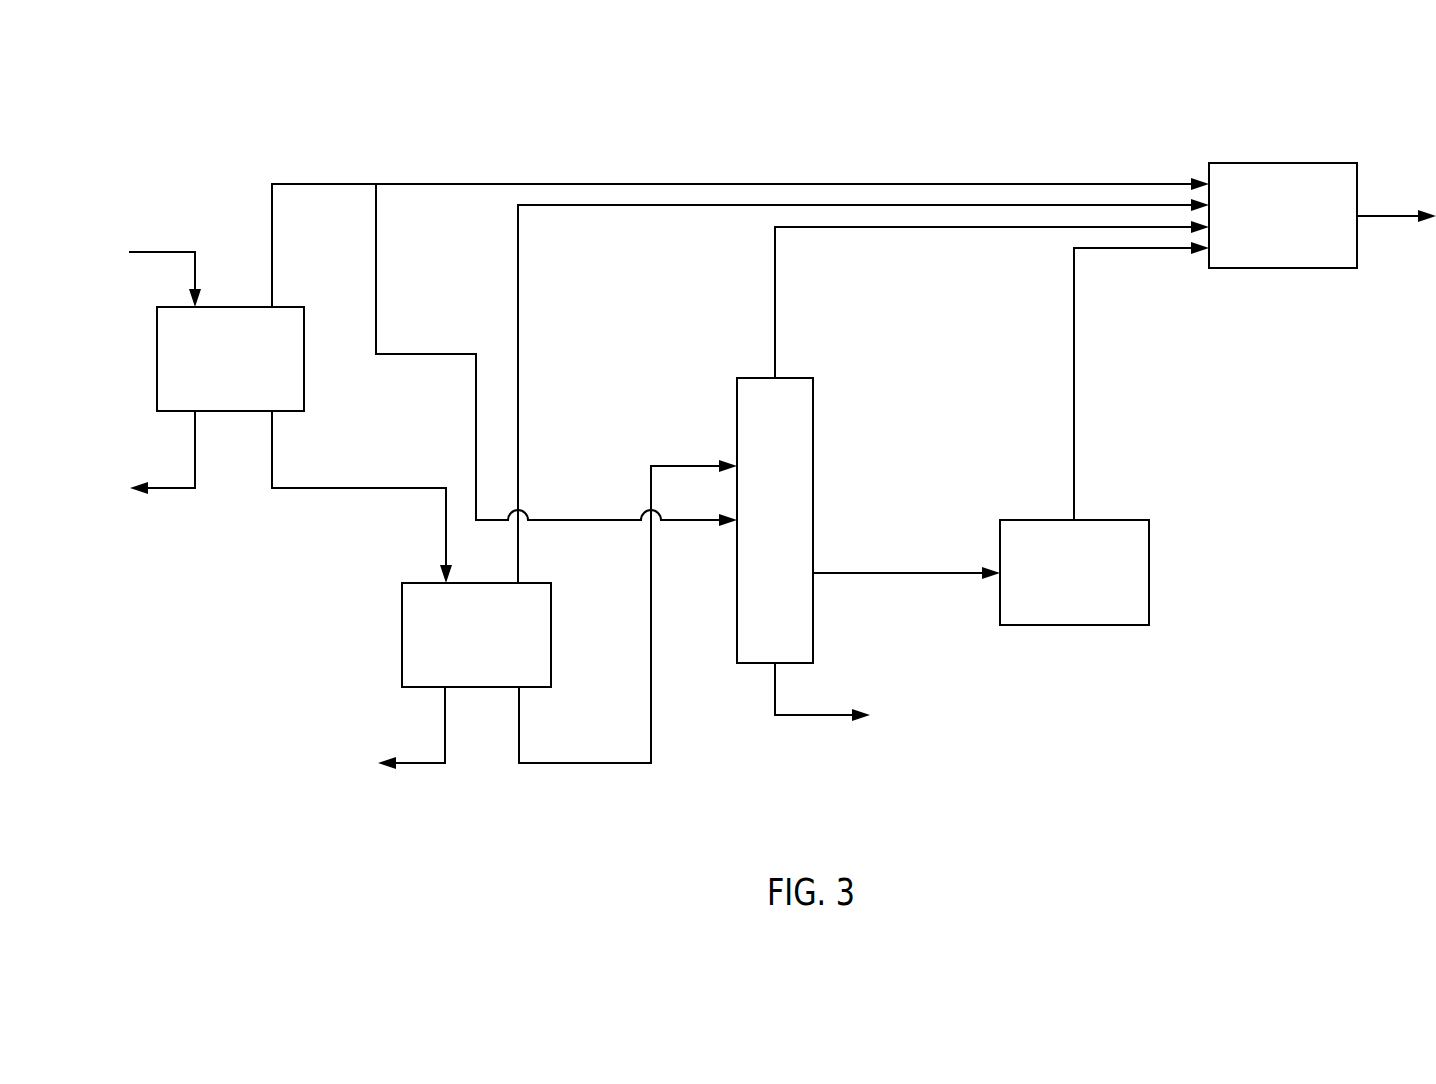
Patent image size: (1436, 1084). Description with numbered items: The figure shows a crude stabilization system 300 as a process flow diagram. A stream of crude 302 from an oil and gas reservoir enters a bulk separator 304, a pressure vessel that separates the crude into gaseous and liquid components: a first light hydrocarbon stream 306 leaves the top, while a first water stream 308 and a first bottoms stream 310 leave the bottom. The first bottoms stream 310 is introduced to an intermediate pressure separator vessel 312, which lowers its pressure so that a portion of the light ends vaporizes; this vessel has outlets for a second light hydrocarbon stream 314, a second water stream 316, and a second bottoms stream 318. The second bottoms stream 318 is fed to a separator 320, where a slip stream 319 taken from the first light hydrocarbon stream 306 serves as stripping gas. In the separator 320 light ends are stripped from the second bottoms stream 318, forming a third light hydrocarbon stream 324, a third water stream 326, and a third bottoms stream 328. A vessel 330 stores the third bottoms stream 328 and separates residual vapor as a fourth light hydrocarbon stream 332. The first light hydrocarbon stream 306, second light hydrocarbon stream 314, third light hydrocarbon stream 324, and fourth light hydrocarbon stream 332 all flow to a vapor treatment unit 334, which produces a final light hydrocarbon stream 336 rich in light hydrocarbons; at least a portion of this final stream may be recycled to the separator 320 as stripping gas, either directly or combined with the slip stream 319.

The crude stabilization system 300 is at (238, 138).
The stream of crude 302 is at (163, 252).
The bulk separator 304 is at (304, 370).
The first light hydrocarbon stream 306 is at (272, 244).
The first water stream 308 is at (168, 492).
The first bottoms stream 310 is at (272, 448).
The intermediate pressure separator vessel 312 is at (402, 641).
The second light hydrocarbon stream 314 is at (519, 356).
The second water stream 316 is at (413, 767).
The second bottoms stream 318 is at (519, 725).
The slip stream 319 is at (376, 270).
The separator 320 is at (813, 406).
The third light hydrocarbon stream 324 is at (775, 302).
The third water stream 326 is at (830, 713).
The third bottoms stream 328 is at (906, 571).
The vessel 330 is at (1149, 573).
The fourth light hydrocarbon stream 332 is at (1074, 383).
The vapor treatment unit 334 is at (1283, 163).
The final light hydrocarbon stream 336 is at (1398, 213).